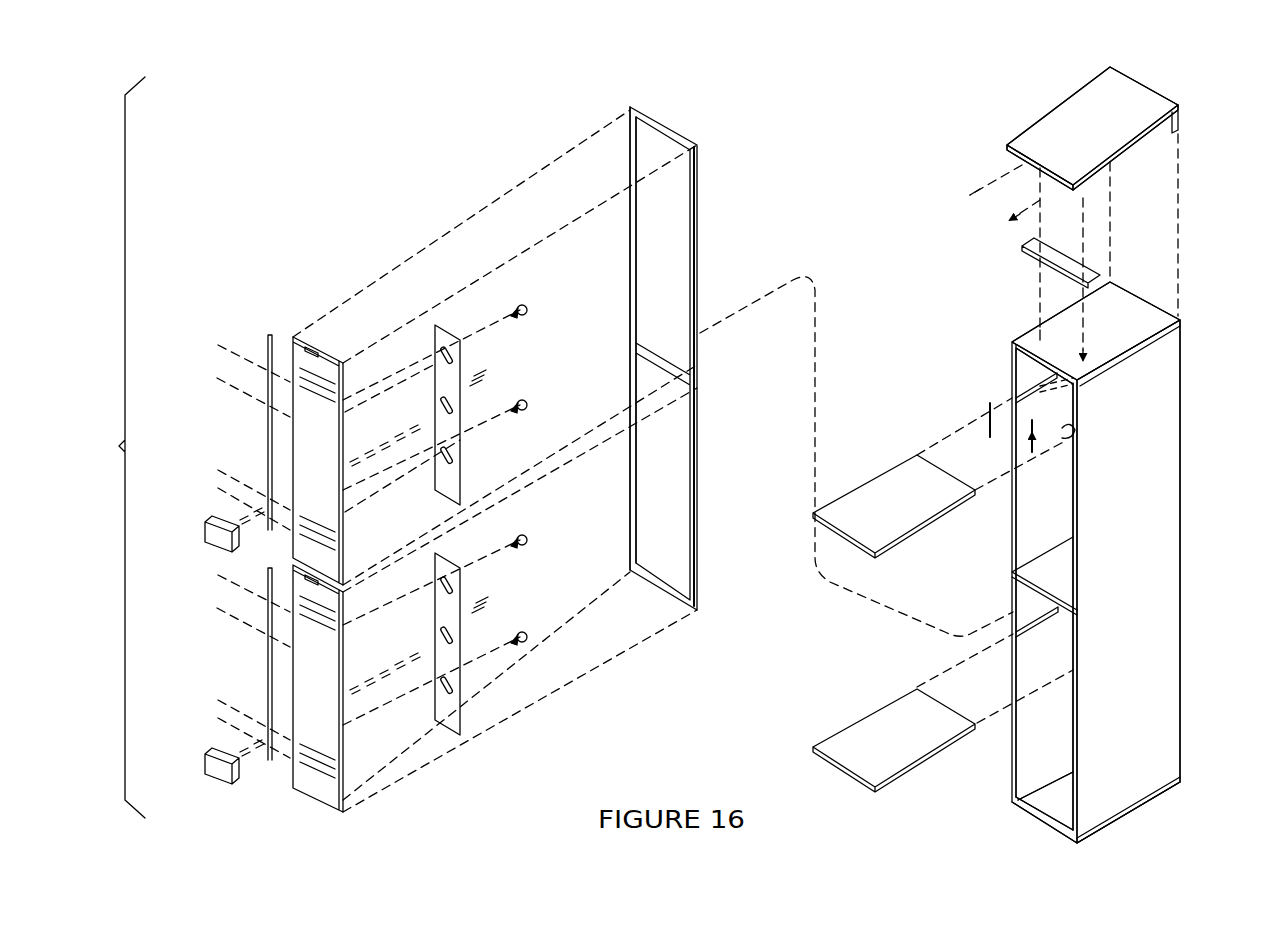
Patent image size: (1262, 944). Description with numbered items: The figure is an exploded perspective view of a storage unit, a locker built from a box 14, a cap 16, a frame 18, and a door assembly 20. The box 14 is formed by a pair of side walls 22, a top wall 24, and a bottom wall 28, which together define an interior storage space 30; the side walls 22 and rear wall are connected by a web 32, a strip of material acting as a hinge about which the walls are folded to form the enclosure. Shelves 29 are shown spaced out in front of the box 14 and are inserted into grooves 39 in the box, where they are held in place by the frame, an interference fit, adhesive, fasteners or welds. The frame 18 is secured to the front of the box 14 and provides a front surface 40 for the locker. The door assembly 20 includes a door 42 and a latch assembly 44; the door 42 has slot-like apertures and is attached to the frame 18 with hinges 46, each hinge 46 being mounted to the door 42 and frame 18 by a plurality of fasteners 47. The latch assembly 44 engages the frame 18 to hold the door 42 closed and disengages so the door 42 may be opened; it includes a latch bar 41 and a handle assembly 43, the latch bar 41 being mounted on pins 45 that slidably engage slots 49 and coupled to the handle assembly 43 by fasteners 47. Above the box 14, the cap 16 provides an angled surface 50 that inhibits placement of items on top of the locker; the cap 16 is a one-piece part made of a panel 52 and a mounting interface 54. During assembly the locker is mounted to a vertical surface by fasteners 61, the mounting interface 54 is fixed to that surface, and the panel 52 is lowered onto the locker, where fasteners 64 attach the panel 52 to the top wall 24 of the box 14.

The box 14 is at (1195, 382).
The cap 16 is at (1168, 76).
The frame 18 is at (668, 126).
The door assembly 20 is at (258, 278).
The side walls 22 is at (1060, 519).
The top wall 24 is at (1150, 325).
The bottom wall 28 is at (1045, 808).
The shelves 29 is at (912, 511).
The interior storage space 30 is at (1018, 548).
The web 32 is at (1182, 700).
The grooves 39 is at (1030, 378).
The front surface 40 is at (632, 152).
The latch bar 41 is at (460, 478).
The door 42 is at (340, 805).
The handle assembly 43 is at (207, 545).
The latch assembly 44 is at (520, 352).
The pins 45 is at (527, 304).
The hinges 46 is at (266, 440).
The fasteners 47 is at (230, 344).
The slots 49 is at (441, 356).
The angled surface 50 is at (1050, 122).
The panel 52 is at (1093, 93).
The mounting interface 54 is at (1180, 120).
The fasteners 61 is at (972, 194).
The fasteners 64 is at (990, 437).